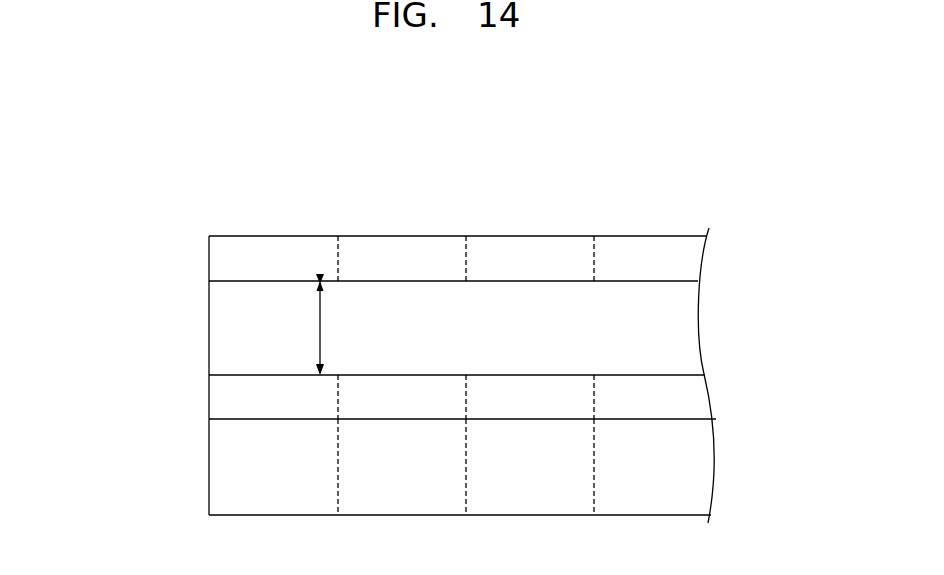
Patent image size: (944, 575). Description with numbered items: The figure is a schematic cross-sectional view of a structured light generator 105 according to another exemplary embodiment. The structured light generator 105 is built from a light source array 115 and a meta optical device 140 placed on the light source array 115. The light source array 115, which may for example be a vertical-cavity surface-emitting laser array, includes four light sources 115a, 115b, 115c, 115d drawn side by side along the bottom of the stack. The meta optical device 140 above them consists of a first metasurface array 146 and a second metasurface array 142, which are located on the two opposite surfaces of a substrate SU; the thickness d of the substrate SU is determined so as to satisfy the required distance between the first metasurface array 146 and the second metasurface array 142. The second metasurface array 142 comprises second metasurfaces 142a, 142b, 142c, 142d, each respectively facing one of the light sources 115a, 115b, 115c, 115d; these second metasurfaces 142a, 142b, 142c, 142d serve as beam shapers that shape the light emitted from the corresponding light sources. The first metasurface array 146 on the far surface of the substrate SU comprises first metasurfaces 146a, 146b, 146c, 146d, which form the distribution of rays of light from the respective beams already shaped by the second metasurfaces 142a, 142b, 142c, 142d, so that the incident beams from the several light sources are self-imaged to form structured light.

The structured light generator 105 is at (678, 194).
The meta optical device 140 is at (734, 235).
The first metasurface array 146 is at (195, 258).
The first metasurface 146a is at (273, 258).
The first metasurface 146b is at (402, 258).
The first metasurface 146c is at (530, 258).
The first metasurface 146d is at (647, 258).
The substrate SU is at (217, 328).
The thickness of the substrate d is at (309, 328).
The second metasurface array 142 is at (195, 395).
The second metasurface 142a is at (273, 397).
The second metasurface 142b is at (402, 397).
The second metasurface 142c is at (530, 397).
The second metasurface 142d is at (650, 397).
The light source array 115 is at (730, 468).
The light source 115a is at (273, 467).
The light source 115b is at (402, 467).
The light source 115c is at (530, 467).
The light source 115d is at (654, 467).